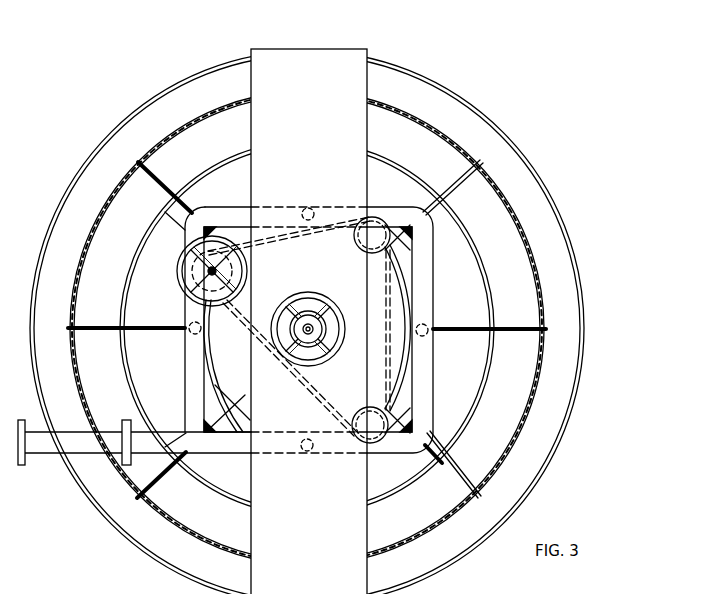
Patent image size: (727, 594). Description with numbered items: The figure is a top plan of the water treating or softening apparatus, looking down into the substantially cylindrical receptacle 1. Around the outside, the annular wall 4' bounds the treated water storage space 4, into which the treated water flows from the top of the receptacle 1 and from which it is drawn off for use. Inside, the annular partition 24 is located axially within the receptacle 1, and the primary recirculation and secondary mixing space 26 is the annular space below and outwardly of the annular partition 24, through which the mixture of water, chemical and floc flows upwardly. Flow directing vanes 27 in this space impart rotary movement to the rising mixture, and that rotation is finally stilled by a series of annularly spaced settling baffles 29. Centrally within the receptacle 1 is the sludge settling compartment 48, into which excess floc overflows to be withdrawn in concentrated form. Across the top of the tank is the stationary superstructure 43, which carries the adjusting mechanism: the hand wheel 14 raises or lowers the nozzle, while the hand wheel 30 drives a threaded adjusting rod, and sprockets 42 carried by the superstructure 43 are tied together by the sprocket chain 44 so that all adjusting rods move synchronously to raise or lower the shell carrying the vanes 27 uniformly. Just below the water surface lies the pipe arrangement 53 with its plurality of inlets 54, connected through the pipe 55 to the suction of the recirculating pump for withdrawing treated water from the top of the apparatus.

The receptacle 1 is at (542, 390).
The treated water storage space 4 is at (317, 322).
The annular wall 4' is at (316, 324).
The hand wheel 14 is at (313, 295).
The annular partition 24 is at (479, 253).
The primary recirculation and secondary mixing space 26 is at (511, 255).
The flow directing vanes 27 is at (128, 342).
The settling baffles 29 is at (93, 327).
The hand wheel 30 is at (177, 276).
The sprockets 42 is at (392, 210).
The stationary superstructure 43 is at (333, 68).
The sprocket chain 44 is at (389, 277).
The sludge settling compartment 48 is at (228, 362).
The pipe arrangement 53 is at (433, 388).
The inlets 54 is at (310, 205).
The pipe 55 is at (37, 450).